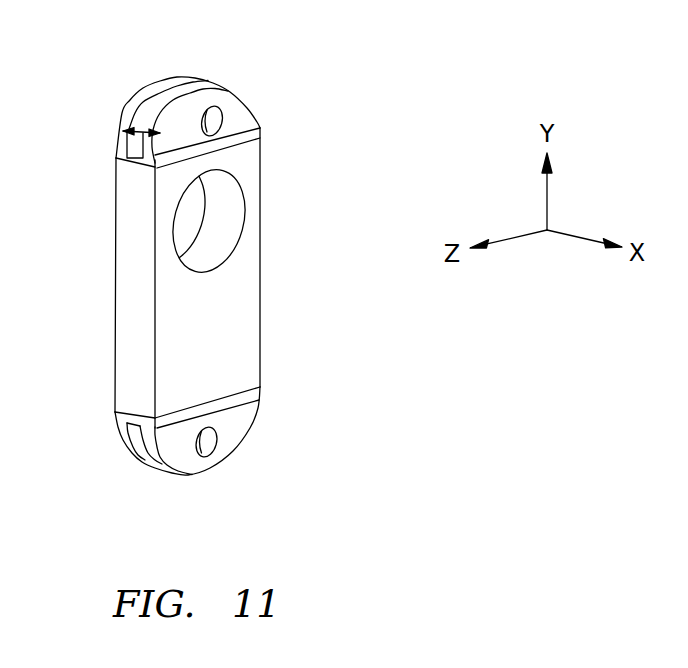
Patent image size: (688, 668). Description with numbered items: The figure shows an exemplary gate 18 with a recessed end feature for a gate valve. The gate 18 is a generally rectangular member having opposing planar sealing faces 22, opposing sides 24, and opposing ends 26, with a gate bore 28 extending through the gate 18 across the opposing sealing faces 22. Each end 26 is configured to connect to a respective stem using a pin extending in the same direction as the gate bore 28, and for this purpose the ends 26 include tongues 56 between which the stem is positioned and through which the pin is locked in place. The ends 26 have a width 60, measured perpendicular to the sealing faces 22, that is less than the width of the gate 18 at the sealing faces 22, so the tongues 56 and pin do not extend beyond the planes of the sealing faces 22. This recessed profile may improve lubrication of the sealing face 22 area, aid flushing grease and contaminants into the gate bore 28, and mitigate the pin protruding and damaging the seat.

The gate 18 is at (312, 115).
The sealing face 22 is at (246, 351).
The side 24 is at (256, 385).
The end 26 is at (130, 100).
The gate bore 28 is at (225, 217).
The tongue 56 is at (183, 98).
The width 60 is at (150, 134).